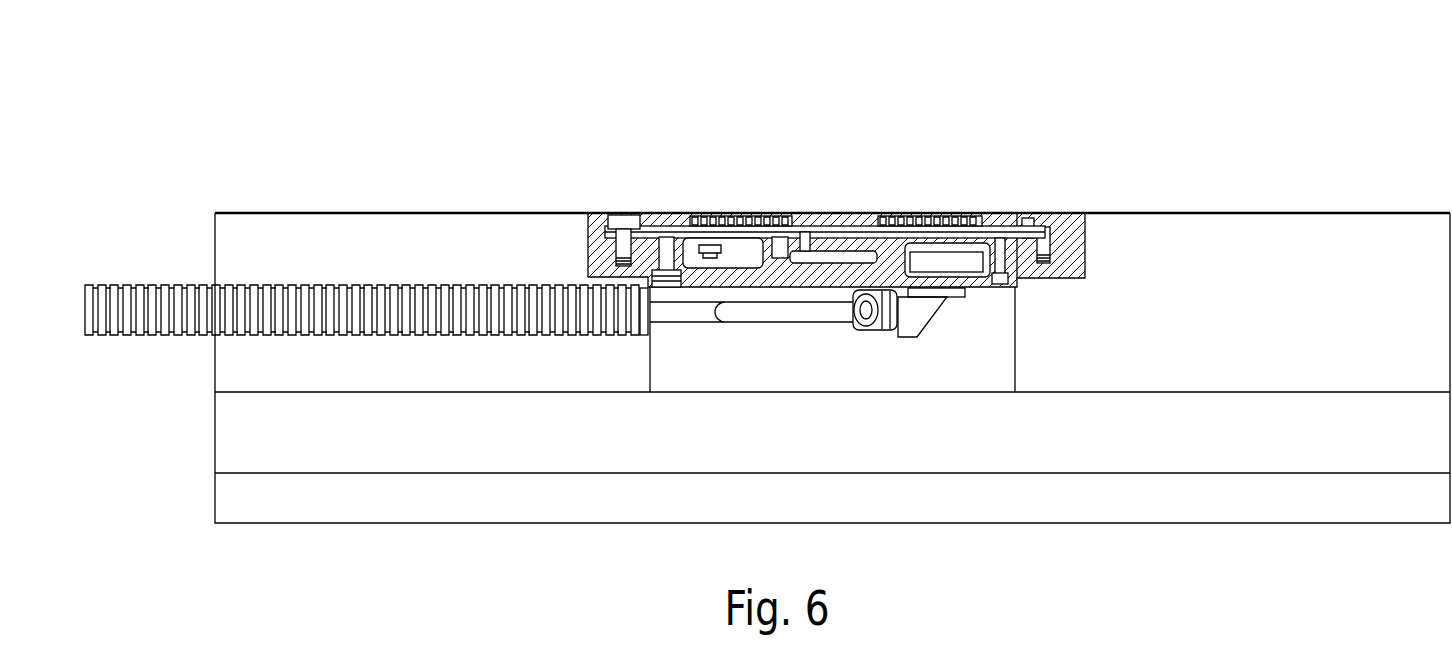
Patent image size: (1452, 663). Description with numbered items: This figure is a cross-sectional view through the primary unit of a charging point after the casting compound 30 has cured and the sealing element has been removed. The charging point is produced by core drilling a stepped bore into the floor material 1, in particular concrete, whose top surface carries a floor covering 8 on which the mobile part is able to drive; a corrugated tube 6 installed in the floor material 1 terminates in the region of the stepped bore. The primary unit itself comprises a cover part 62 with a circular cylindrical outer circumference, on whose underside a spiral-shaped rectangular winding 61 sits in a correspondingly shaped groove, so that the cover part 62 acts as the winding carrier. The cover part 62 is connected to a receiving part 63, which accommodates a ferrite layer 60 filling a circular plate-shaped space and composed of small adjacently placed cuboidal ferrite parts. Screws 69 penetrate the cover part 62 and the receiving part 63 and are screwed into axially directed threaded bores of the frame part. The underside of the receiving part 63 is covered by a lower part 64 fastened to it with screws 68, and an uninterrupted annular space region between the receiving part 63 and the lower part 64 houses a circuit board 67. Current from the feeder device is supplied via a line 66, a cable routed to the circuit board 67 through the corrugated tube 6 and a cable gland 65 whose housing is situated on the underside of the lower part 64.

The floor material 1 is at (328, 242).
The corrugated tube 6 is at (147, 309).
The floor covering 8 is at (504, 211).
The casting compound 30 is at (1073, 238).
The ferrite layer 60 is at (1045, 220).
The spiral-shaped rectangular winding 61 is at (901, 219).
The cover part 62 is at (845, 218).
The receiving part 63 is at (830, 242).
The lower part 64 is at (772, 272).
The cable gland 65 is at (922, 307).
The line 66 is at (824, 312).
The circuit board 67 is at (728, 258).
The screws 68 is at (663, 272).
The screws 69 is at (624, 220).